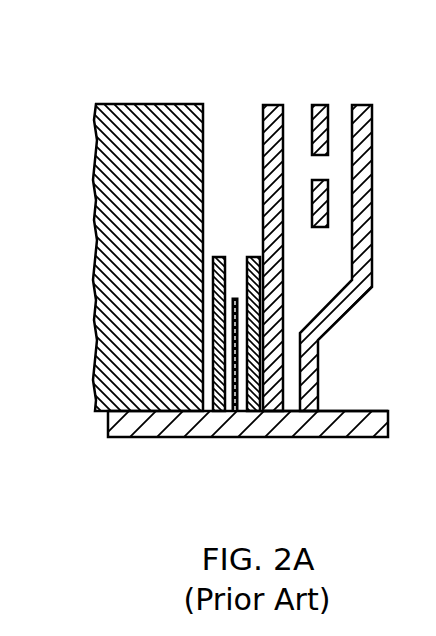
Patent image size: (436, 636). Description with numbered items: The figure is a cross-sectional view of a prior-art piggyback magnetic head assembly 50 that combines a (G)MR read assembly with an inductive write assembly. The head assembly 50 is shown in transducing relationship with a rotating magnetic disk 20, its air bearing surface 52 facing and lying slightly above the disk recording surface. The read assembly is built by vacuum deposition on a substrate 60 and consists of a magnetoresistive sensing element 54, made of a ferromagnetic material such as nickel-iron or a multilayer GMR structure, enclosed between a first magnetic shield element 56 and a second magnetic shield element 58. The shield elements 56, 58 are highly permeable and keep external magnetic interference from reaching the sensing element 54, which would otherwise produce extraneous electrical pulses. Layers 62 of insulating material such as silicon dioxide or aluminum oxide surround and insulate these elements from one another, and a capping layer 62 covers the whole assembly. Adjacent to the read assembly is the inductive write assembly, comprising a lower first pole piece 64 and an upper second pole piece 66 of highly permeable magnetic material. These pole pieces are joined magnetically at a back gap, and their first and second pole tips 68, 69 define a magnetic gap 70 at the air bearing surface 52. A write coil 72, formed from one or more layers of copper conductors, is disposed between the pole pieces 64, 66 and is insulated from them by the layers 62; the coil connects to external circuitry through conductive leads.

The rotating magnetic disk 20 is at (388, 427).
The magnetic head assembly 50 is at (82, 252).
The air bearing surface 52 is at (353, 411).
The magnetoresistive sensing element 54 is at (233, 411).
The first magnetic shield element 56 is at (217, 411).
The second magnetic shield element 58 is at (253, 411).
The substrate 60 is at (95, 335).
The insulating layers 62 is at (240, 100).
The first pole piece 64 is at (263, 192).
The second pole piece 66 is at (372, 135).
The first pole tip 68 is at (273, 411).
The second pole tip 69 is at (303, 411).
The magnetic gap 70 is at (295, 411).
The write coil 72 is at (315, 105).